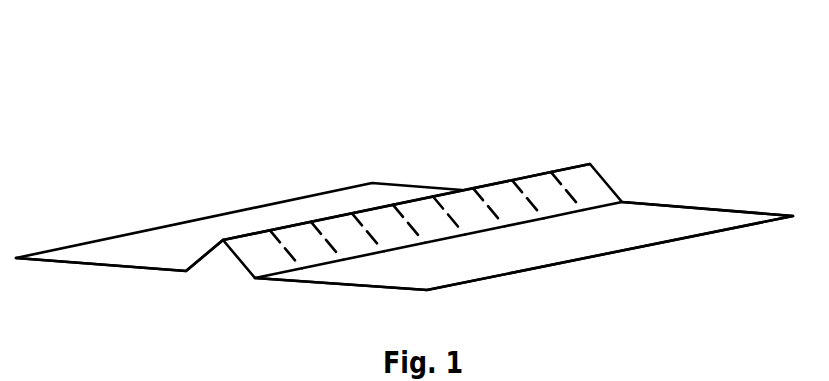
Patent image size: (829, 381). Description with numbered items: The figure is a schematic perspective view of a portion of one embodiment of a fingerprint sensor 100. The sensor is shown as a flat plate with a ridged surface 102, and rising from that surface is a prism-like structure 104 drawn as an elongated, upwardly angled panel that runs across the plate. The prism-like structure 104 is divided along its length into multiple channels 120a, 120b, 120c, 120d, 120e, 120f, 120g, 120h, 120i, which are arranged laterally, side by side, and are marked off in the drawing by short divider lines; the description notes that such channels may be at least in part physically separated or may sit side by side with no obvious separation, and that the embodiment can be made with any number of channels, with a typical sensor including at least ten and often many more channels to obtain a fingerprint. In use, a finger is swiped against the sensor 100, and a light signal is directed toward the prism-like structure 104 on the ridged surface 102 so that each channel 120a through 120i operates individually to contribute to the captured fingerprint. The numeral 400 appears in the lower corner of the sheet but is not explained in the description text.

The fingerprint sensor 100 is at (645, 80).
The ridged surface 102 is at (642, 247).
The prism-like structure 104 is at (207, 254).
The channel 120a is at (242, 236).
The channel 120b is at (289, 226).
The channel 120c is at (335, 217).
The channel 120d is at (383, 207).
The channel 120e is at (428, 198).
The channel 120f is at (468, 189).
The channel 120g is at (505, 182).
The channel 120h is at (550, 172).
The channel 120i is at (589, 164).
The sheet marker 400 is at (754, 372).